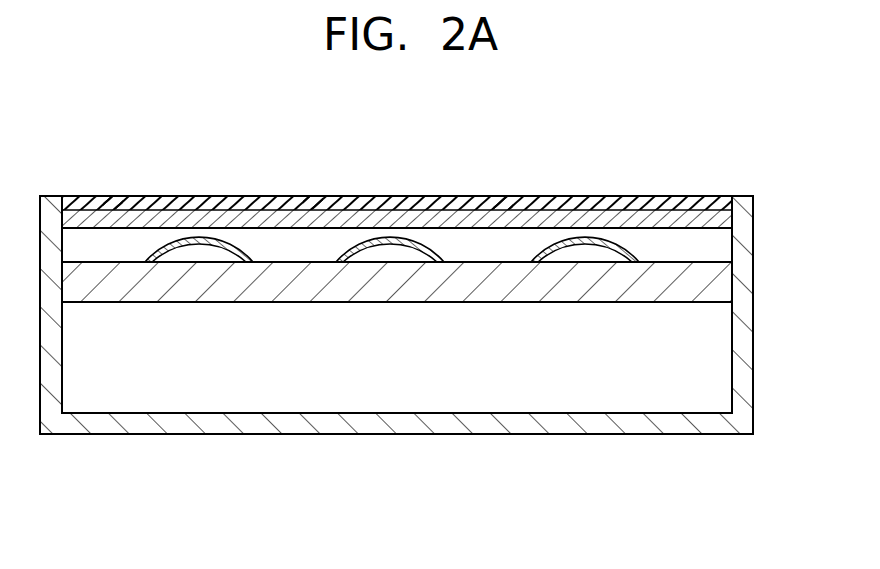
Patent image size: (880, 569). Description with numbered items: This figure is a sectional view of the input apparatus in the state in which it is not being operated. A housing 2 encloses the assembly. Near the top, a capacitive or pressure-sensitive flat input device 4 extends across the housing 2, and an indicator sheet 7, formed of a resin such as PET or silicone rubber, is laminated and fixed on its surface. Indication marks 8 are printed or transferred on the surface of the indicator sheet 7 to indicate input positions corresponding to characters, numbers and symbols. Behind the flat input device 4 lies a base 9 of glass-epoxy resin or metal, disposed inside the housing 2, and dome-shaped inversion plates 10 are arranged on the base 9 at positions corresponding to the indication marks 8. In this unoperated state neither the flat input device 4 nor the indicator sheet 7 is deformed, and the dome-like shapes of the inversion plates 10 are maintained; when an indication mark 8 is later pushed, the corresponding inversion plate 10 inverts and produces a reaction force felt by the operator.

The housing 2 is at (746, 358).
The flat input device 4 is at (736, 218).
The indicator sheet 7 is at (701, 200).
The indication marks 8 is at (115, 203).
The base 9 is at (722, 284).
The inversion plates 10 is at (194, 238).